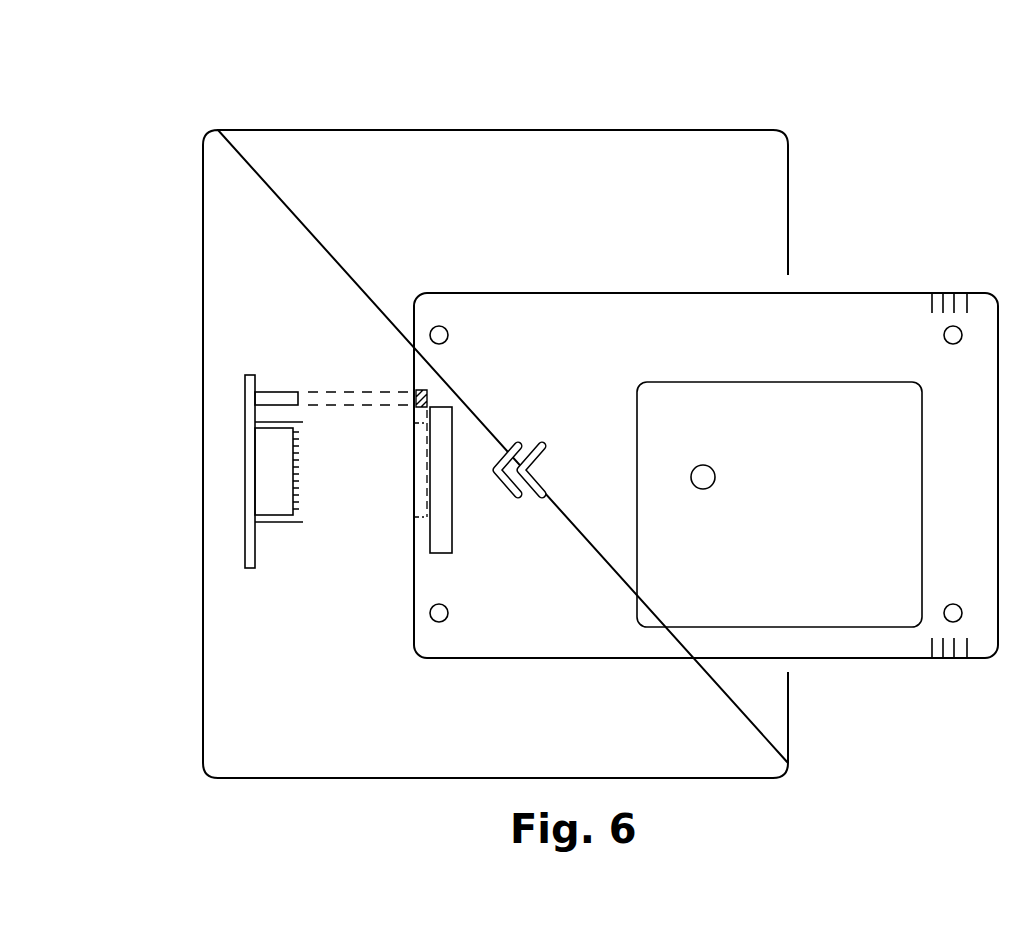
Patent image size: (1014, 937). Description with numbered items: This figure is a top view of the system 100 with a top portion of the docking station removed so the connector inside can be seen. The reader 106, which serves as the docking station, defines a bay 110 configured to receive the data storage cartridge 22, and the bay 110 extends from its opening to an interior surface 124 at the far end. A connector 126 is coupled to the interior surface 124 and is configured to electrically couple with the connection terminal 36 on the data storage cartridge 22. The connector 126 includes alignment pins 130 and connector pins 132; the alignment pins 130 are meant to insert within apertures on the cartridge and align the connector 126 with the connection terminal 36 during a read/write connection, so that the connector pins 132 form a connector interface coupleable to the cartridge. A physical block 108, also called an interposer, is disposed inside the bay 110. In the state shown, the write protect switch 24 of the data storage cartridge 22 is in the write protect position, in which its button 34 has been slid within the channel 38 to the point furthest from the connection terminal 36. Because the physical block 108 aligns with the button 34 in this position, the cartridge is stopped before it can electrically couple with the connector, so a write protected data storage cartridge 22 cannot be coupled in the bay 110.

The system 100 is at (141, 110).
The reader 106 is at (589, 126).
The bay 110 is at (797, 673).
The data storage cartridge 22 is at (918, 287).
The button 34 is at (416, 390).
The write protect switch 24 is at (432, 406).
The channel 38 is at (431, 416).
The connection terminal 36 is at (430, 520).
The physical block 108 is at (283, 390).
The interior surface 124 is at (249, 568).
The connector 126 is at (325, 521).
The alignment pins 130 is at (295, 423).
The connector pins 132 is at (300, 478).